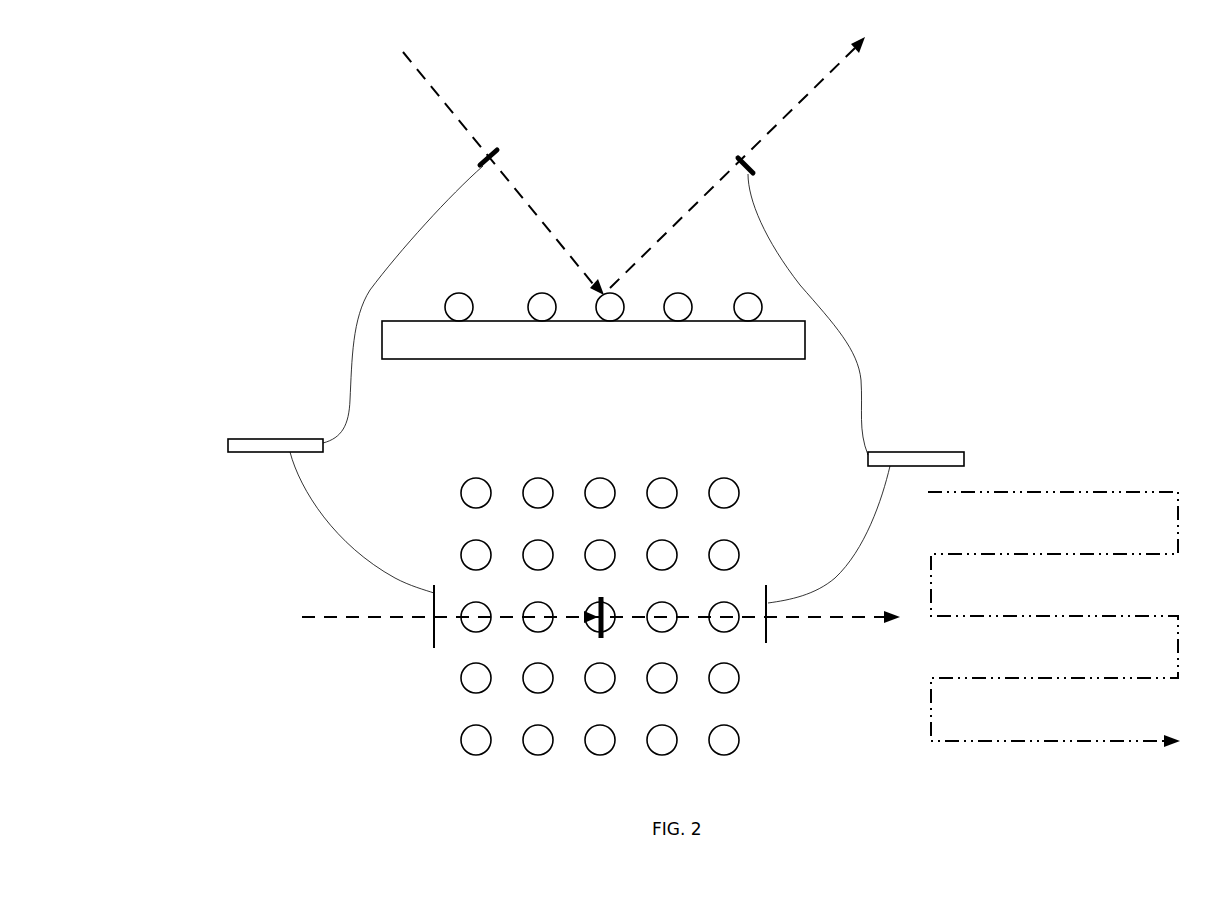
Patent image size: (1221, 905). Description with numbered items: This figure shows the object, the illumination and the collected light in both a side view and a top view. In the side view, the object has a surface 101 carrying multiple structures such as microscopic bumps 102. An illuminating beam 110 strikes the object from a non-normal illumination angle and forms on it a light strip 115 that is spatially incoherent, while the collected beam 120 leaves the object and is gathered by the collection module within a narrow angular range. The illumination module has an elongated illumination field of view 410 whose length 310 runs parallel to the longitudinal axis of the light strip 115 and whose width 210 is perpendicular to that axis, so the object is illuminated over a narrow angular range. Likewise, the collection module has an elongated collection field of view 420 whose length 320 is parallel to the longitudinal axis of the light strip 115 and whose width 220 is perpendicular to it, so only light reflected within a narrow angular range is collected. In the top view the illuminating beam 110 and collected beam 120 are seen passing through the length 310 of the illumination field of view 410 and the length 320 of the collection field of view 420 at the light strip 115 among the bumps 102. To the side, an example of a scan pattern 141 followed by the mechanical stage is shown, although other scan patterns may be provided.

The illuminating beam 110 is at (468, 122).
The collected beam 120 is at (815, 94).
The width of the illumination field of view 210 is at (426, 287).
The width of the collection field of view 220 is at (793, 297).
The surface 101 is at (608, 348).
The microscopic bumps 102 is at (598, 299).
The illumination field of view 410 is at (236, 439).
The collection field of view 420 is at (910, 452).
The light strip 115 is at (605, 603).
The length of the illumination field of view 310 is at (429, 627).
The length of the collection field of view 320 is at (767, 627).
The scan pattern 141 is at (1098, 491).